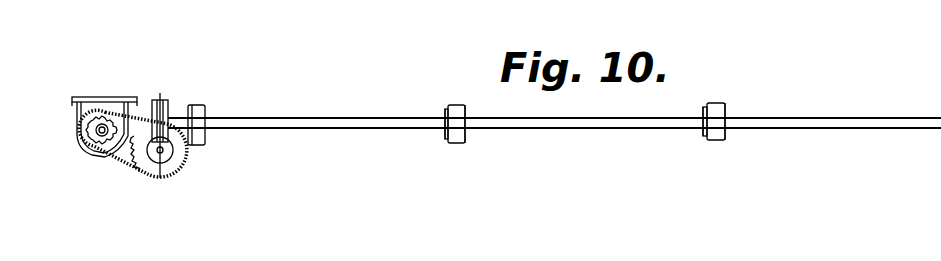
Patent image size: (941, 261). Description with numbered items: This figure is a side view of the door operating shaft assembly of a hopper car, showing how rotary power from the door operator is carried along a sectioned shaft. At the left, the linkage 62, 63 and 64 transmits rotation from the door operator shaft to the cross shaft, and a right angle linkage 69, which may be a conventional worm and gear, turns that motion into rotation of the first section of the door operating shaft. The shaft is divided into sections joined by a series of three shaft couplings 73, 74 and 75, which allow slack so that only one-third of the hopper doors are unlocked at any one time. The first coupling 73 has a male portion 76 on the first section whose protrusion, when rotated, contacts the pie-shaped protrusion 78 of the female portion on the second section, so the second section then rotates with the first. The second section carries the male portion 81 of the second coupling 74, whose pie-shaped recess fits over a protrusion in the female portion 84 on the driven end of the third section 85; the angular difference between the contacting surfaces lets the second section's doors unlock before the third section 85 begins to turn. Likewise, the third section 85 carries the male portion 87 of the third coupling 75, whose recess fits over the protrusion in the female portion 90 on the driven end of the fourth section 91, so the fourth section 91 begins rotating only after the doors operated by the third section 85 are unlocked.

The linkage 62 is at (118, 168).
The linkage 63 is at (85, 146).
The linkage 64 is at (158, 178).
The right angle linkage 69 is at (168, 102).
The first door operating shaft coupling 73 is at (205, 112).
The second door operating shaft coupling 74 is at (455, 133).
The third door operating shaft coupling 75 is at (718, 135).
The male portion 76 is at (190, 113).
The pie-shaped protrusion 78 is at (207, 143).
The male portion 81 is at (443, 130).
The female portion 84 is at (465, 112).
The third section 85 is at (542, 130).
The male portion 87 is at (705, 138).
The female portion 90 is at (725, 110).
The fourth section 91 is at (803, 127).